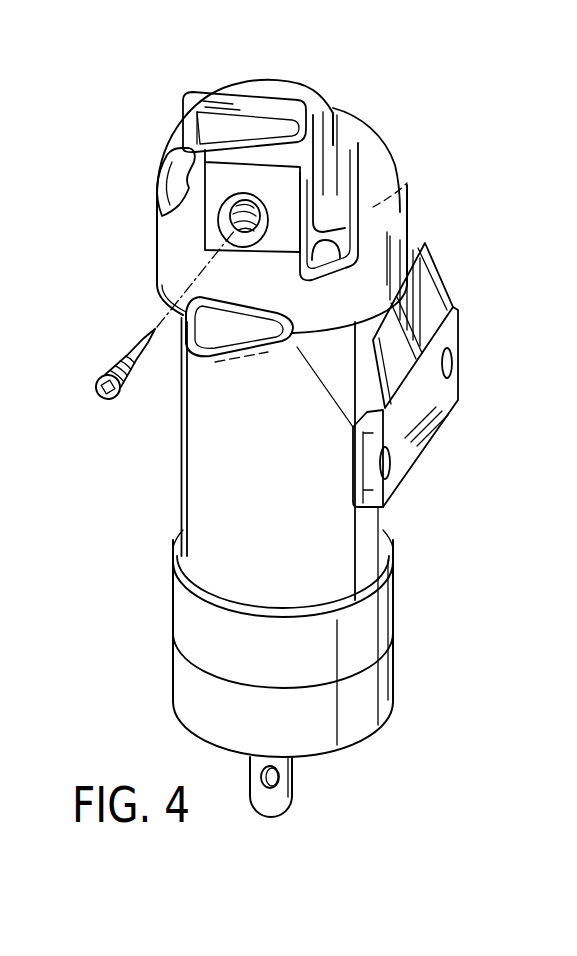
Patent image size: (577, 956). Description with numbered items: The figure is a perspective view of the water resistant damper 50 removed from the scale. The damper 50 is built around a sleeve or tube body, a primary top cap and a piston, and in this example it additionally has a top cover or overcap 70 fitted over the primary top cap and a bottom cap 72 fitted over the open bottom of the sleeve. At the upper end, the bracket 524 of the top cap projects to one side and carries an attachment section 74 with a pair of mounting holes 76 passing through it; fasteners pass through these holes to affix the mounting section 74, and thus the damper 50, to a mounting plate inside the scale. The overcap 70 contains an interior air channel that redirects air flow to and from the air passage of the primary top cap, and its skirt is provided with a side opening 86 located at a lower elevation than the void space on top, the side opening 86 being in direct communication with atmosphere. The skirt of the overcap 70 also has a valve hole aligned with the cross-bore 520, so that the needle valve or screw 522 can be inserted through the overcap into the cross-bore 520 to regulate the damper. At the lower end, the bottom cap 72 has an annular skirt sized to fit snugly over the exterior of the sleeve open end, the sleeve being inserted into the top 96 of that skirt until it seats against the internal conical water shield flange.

The water resistant damper 50 is at (430, 178).
The overcap 70 is at (382, 163).
The bottom cap 72 is at (390, 612).
The attachment section 74 is at (428, 392).
The mounting holes 76 is at (452, 352).
The side opening 86 is at (185, 157).
The top of the skirt 96 is at (392, 545).
The cross-bore 520 is at (232, 226).
The needle valve or screw 522 is at (100, 368).
The bracket 524 is at (448, 278).